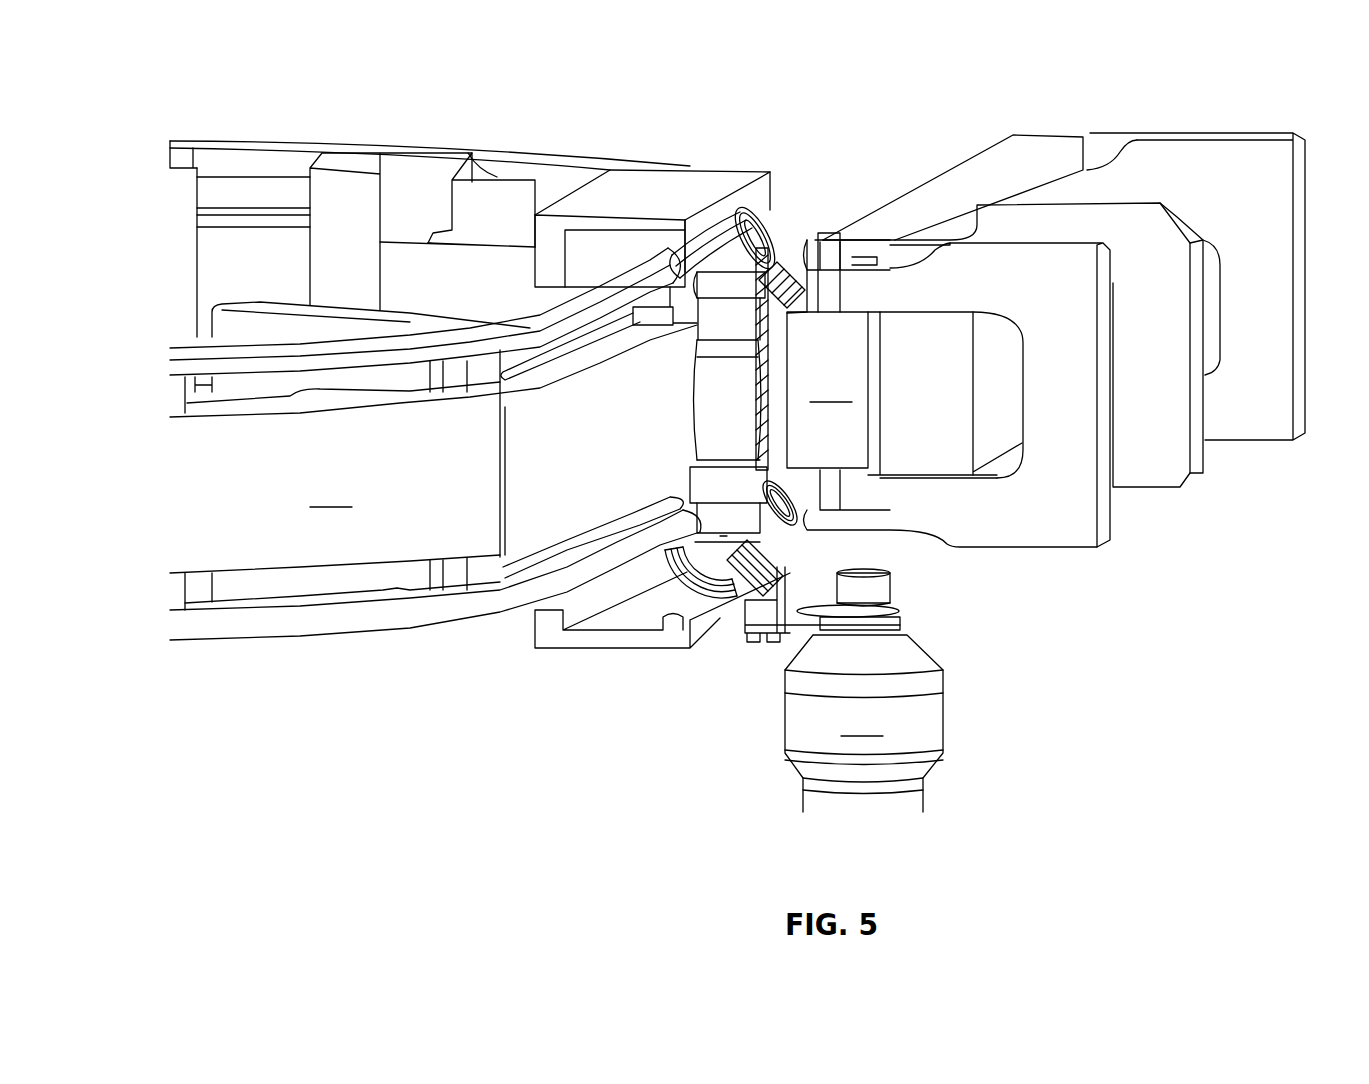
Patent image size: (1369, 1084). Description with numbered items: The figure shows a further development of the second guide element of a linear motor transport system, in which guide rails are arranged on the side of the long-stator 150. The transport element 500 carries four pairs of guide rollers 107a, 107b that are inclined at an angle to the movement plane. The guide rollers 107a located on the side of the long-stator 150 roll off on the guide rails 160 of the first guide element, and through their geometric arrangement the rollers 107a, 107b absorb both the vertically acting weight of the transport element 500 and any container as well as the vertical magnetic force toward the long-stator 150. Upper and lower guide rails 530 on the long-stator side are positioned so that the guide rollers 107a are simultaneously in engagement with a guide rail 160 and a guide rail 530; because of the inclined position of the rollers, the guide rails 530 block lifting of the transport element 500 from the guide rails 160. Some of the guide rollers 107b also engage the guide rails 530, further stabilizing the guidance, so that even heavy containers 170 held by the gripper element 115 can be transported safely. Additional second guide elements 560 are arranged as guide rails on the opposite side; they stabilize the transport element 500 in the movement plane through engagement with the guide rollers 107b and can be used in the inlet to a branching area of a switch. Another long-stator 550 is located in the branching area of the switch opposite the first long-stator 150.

The long-stator 150 is at (433, 375).
The guide rails 160 is at (188, 357).
The upper and lower guide rails 530 is at (722, 172).
The transport element 500 is at (686, 411).
The guide rollers 107a is at (690, 500).
The guide rollers 107b is at (788, 268).
The long-stator 550 is at (1046, 340).
The second guide elements 560 is at (998, 133).
The gripper element 115 is at (775, 645).
The containers 170 is at (864, 690).